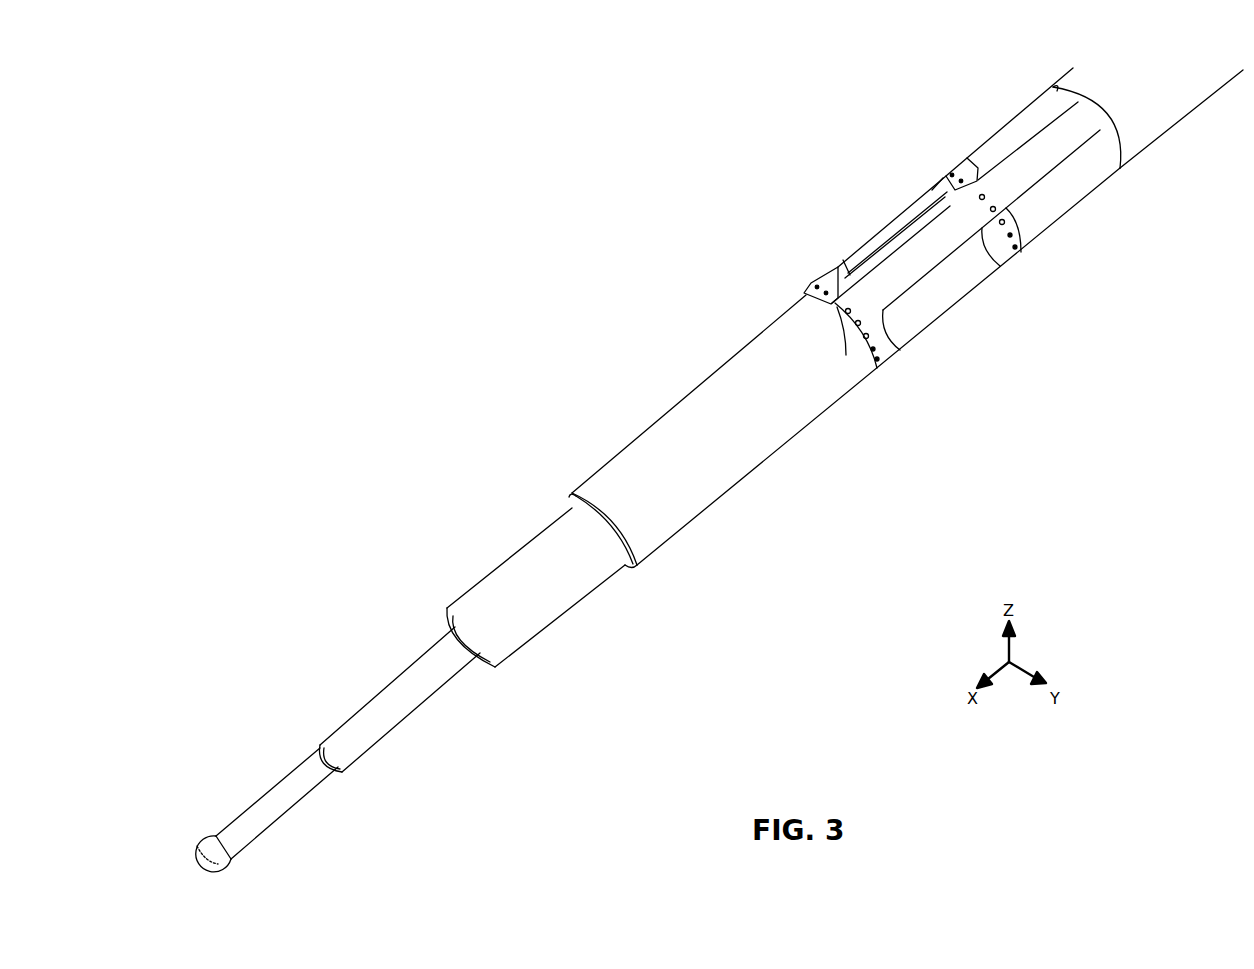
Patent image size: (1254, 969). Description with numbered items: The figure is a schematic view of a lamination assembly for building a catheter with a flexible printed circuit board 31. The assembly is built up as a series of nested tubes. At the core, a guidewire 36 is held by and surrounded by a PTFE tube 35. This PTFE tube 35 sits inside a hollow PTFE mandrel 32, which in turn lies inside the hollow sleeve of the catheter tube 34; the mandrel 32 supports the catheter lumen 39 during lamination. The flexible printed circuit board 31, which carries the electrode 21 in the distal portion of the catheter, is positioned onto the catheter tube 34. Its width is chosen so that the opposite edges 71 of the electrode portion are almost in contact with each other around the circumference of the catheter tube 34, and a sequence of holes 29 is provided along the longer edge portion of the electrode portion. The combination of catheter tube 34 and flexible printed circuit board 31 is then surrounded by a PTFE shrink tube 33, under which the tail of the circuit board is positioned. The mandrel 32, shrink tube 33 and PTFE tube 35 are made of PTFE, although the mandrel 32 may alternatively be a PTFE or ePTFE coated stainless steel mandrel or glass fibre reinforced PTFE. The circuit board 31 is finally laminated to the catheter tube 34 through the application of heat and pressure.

The electrode 21 is at (947, 290).
The holes 29 is at (877, 370).
The flexible printed circuit board 31 is at (993, 189).
The PTFE mandrel 32 is at (535, 553).
The PTFE shrink tube 33 is at (1132, 120).
The catheter tube 34 is at (725, 410).
The PTFE tube 35 is at (387, 717).
The guidewire 36 is at (293, 790).
The catheter lumen 39 is at (630, 563).
The edge 71 is at (813, 288).